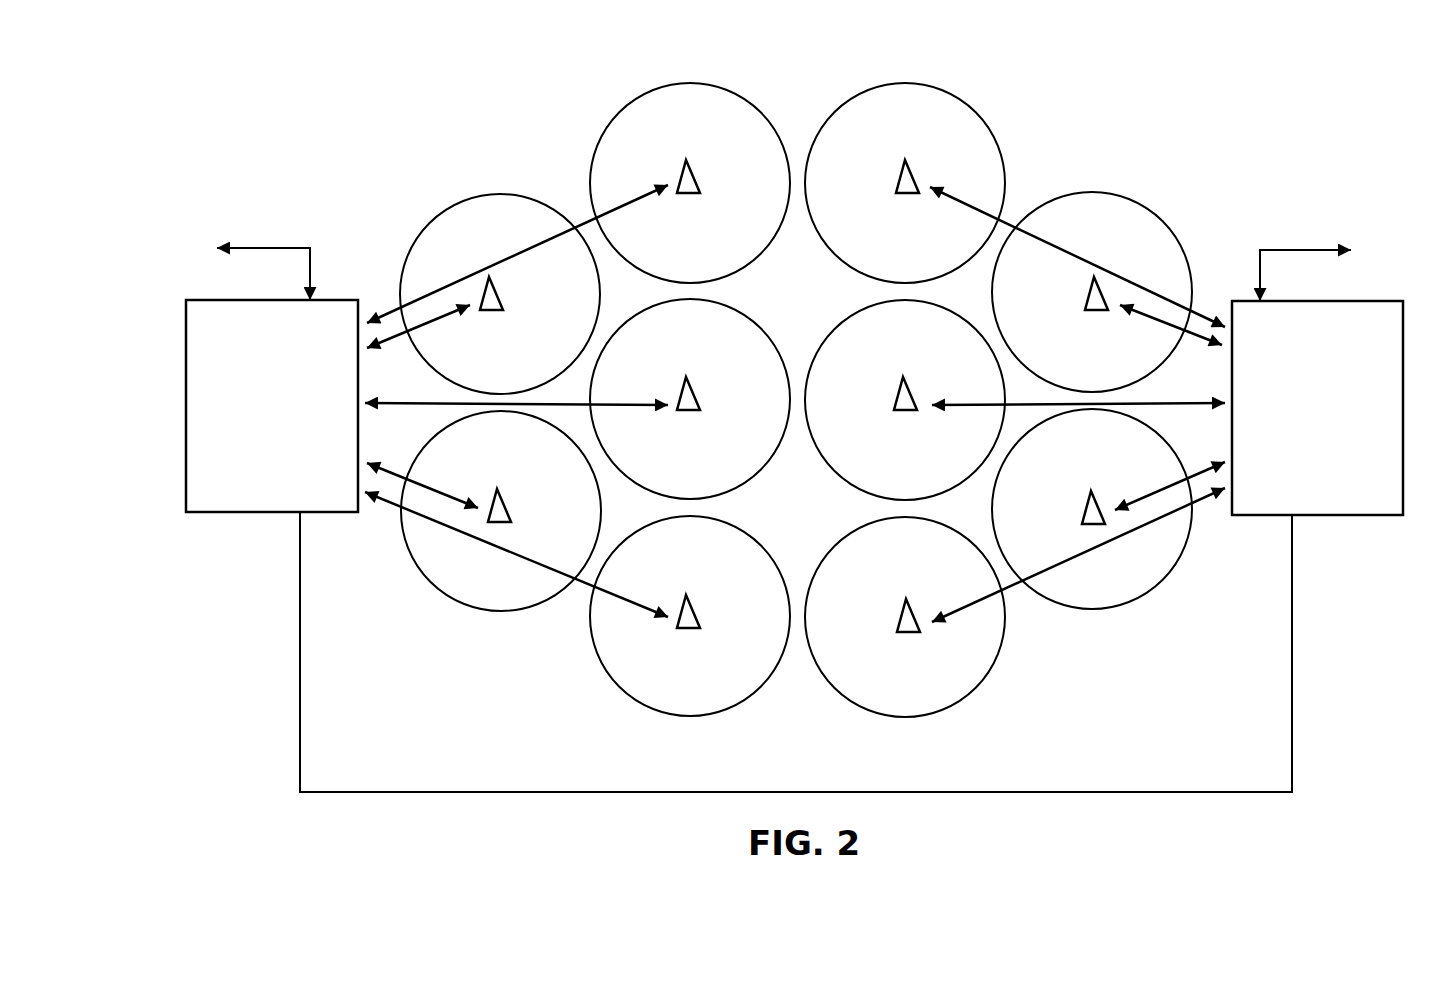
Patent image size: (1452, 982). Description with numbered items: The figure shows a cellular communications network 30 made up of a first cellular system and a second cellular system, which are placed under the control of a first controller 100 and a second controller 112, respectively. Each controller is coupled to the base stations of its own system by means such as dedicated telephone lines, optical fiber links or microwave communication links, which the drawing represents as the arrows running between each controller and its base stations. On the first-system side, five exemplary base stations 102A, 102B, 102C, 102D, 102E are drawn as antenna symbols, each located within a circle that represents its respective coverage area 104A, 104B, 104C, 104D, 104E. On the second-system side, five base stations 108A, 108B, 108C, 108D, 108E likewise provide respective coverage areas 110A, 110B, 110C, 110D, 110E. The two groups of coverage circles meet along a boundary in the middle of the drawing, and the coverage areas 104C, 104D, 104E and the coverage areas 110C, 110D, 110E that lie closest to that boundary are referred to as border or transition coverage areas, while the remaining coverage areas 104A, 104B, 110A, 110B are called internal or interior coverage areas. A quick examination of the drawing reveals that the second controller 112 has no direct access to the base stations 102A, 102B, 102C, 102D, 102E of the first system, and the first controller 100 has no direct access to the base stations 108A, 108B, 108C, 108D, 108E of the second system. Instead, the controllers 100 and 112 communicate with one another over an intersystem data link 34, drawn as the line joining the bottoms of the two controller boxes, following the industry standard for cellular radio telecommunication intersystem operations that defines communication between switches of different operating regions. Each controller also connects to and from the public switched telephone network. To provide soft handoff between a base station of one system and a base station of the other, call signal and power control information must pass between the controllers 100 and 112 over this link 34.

The cellular communications network 30 is at (1325, 130).
The intersystem data link 34 is at (1294, 646).
The first controller 100 is at (186, 382).
The second controller 112 is at (1403, 428).
The base station 102A is at (505, 308).
The base station 102B is at (513, 518).
The base station 102C is at (702, 624).
The base station 102D is at (702, 407).
The base station 102E is at (702, 190).
The coverage area 104A is at (541, 386).
The coverage area 104B is at (542, 603).
The coverage area 104C is at (732, 708).
The coverage area 104D is at (732, 492).
The coverage area 104E is at (731, 276).
The base station 108A is at (1085, 305).
The base station 108B is at (1082, 519).
The base station 108C is at (897, 625).
The base station 108D is at (894, 406).
The base station 108E is at (896, 189).
The coverage area 110A is at (1133, 385).
The coverage area 110B is at (1133, 603).
The coverage area 110C is at (946, 709).
The coverage area 110D is at (946, 492).
The coverage area 110E is at (948, 275).